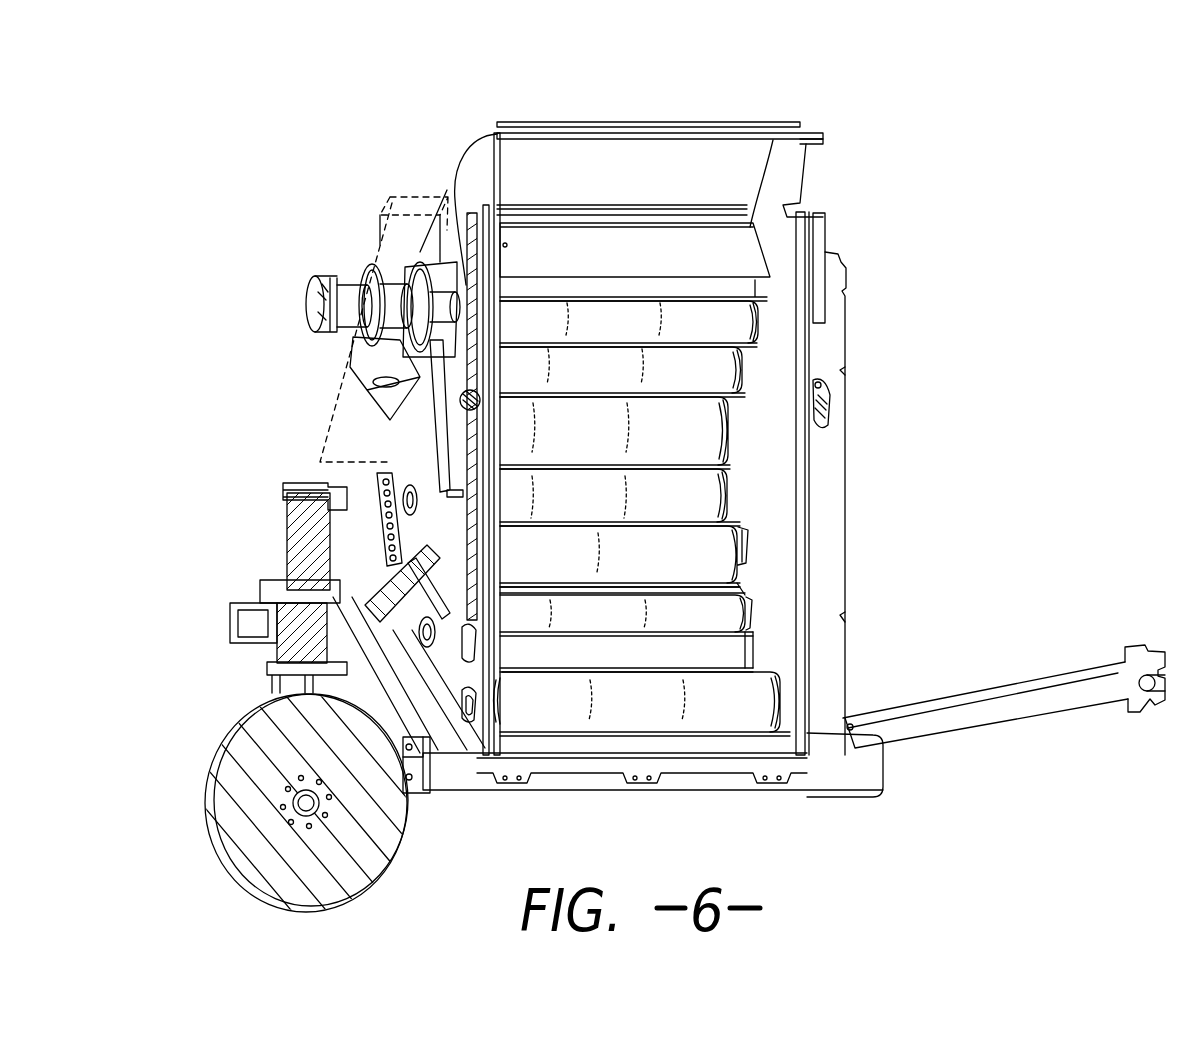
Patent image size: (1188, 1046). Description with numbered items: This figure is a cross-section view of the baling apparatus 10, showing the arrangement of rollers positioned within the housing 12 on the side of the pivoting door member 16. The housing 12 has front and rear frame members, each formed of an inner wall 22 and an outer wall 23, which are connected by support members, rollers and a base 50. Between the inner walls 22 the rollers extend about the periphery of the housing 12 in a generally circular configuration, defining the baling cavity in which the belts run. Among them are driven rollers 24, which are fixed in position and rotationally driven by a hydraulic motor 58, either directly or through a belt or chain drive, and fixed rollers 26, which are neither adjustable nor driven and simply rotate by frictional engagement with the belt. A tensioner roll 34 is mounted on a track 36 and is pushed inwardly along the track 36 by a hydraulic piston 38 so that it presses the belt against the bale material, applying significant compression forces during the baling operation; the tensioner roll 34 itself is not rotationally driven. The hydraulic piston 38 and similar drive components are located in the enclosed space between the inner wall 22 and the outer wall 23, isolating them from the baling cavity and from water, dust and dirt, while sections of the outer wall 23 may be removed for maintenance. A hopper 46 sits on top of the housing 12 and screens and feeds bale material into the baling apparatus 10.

The baling apparatus 10 is at (993, 225).
The housing 12 is at (497, 763).
The pivoting door member 16 is at (443, 248).
The inner wall 22 is at (700, 438).
The outer wall 23 is at (830, 435).
The driven rollers 24 is at (710, 313).
The fixed rollers 26 is at (710, 370).
The tensioner roll 34 is at (708, 548).
The track 36 is at (380, 580).
The hydraulic piston 38 is at (443, 443).
The hopper 46 is at (673, 167).
The base 50 is at (807, 780).
The hydraulic motor 58 is at (307, 303).